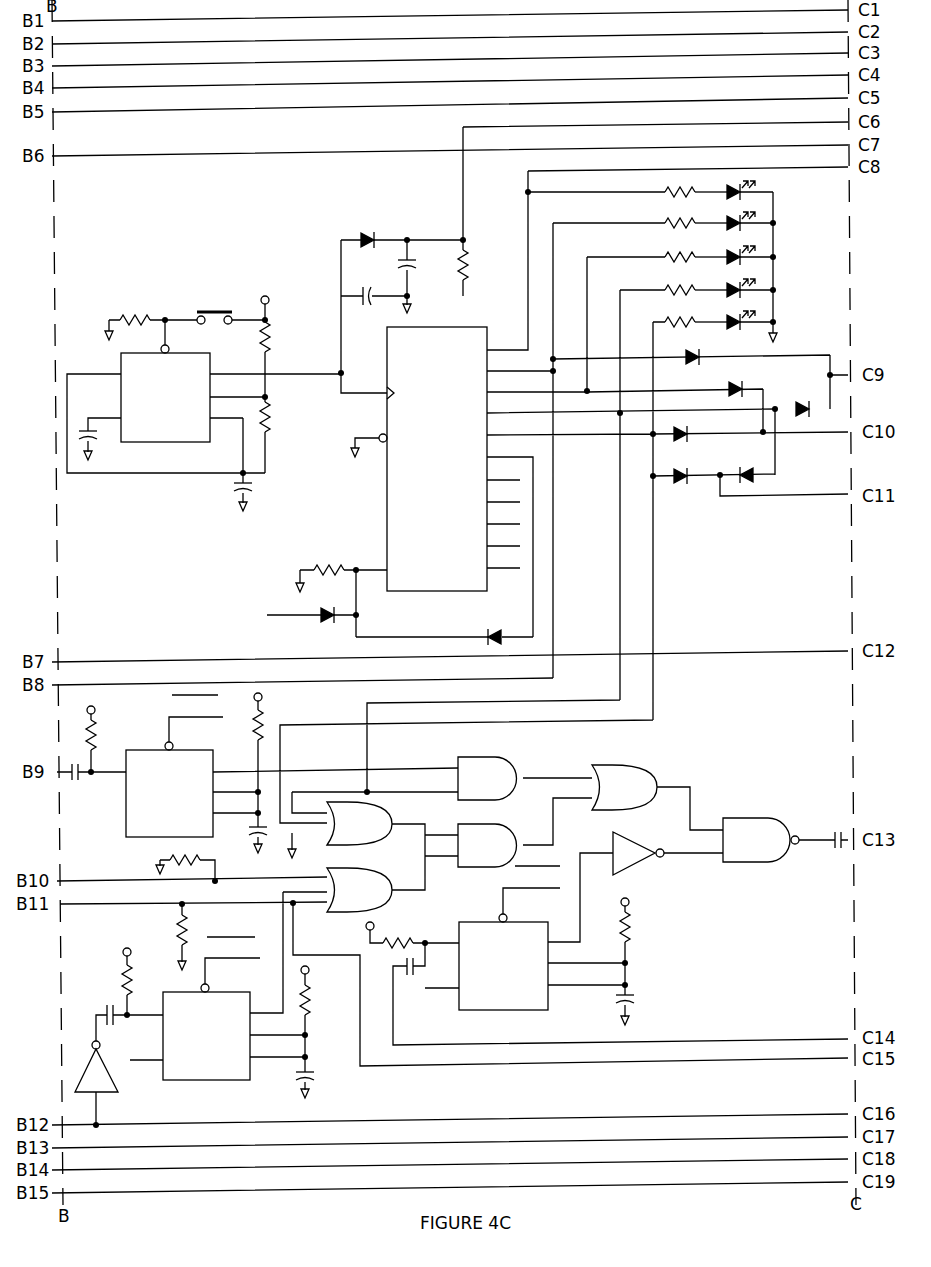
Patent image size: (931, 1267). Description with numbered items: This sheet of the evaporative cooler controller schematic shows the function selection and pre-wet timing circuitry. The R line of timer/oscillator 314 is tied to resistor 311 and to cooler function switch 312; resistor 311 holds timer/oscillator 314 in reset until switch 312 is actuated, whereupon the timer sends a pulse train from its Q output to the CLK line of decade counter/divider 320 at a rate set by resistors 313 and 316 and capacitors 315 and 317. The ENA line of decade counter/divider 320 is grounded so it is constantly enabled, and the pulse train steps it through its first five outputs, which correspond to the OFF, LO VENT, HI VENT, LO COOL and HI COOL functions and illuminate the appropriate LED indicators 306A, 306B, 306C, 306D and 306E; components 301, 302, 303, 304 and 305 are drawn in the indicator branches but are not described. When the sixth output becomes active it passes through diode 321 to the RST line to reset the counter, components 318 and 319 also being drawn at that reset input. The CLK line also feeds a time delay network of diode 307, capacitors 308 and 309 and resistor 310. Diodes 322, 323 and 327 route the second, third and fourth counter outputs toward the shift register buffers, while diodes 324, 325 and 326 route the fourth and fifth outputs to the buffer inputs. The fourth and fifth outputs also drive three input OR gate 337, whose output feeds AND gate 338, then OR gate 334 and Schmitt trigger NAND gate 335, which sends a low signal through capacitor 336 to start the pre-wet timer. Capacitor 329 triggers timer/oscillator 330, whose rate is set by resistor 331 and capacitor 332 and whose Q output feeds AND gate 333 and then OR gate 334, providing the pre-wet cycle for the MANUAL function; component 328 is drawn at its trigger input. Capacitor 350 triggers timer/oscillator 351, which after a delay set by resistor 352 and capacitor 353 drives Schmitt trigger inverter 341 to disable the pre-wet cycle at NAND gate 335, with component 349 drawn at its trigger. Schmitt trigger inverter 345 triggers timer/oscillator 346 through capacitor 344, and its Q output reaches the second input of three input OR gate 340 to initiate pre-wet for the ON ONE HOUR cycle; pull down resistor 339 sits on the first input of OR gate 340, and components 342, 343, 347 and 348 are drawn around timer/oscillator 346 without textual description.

The resistor 301 is at (696, 202).
The resistor 302 is at (696, 234).
The resistor 303 is at (696, 268).
The resistor 304 is at (696, 300).
The resistor 305 is at (696, 332).
The LED indicator 306A is at (773, 191).
The LED indicator 306B is at (772, 222).
The LED indicator 306C is at (772, 255).
The LED indicator 306D is at (772, 289).
The LED indicator 306E is at (772, 321).
The diode 307 is at (372, 229).
The capacitor 308 is at (389, 276).
The capacitor 309 is at (367, 308).
The resistor 310 is at (479, 268).
The resistor 311 is at (135, 331).
The cooler function switch 312 is at (215, 328).
The resistor 313 is at (281, 335).
The timer/oscillator 314 is at (165, 393).
The capacitor 315 is at (102, 447).
The resistor 316 is at (281, 423).
The capacitor 317 is at (260, 464).
The resistor 318 is at (326, 582).
The diode 319 is at (311, 624).
The decade counter/divider 320 is at (449, 472).
The diode 321 is at (496, 624).
The diode 322 is at (684, 370).
The diode 323 is at (739, 376).
The diode 324 is at (807, 396).
The diode 325 is at (684, 446).
The diode 326 is at (684, 488).
The diode 327 is at (749, 462).
The resistor 328 is at (107, 739).
The capacitor 329 is at (91, 785).
The timer/oscillator 330 is at (174, 778).
The resistor 331 is at (243, 760).
The capacitor 332 is at (244, 843).
The AND gate 333 is at (487, 768).
The OR gate 334 is at (624, 778).
The Schmitt trigger NAND gate 335 is at (761, 829).
The capacitor 336 is at (837, 852).
The three input OR gate 337 is at (359, 834).
The AND gate 338 is at (487, 835).
The pull down resistor 339 is at (185, 869).
The three input OR gate 340 is at (359, 901).
The Schmitt trigger inverter 341 is at (638, 844).
The resistor 342 is at (167, 937).
The resistor 343 is at (142, 981).
The capacitor 344 is at (95, 1005).
The Schmitt trigger inverter 345 is at (104, 1083).
The timer/oscillator 346 is at (211, 1020).
The resistor 347 is at (320, 1019).
The capacitor 348 is at (324, 1083).
The resistor 349 is at (395, 934).
The capacitor 350 is at (411, 979).
The timer/oscillator 351 is at (509, 949).
The resistor 352 is at (640, 941).
The capacitor 353 is at (644, 1005).